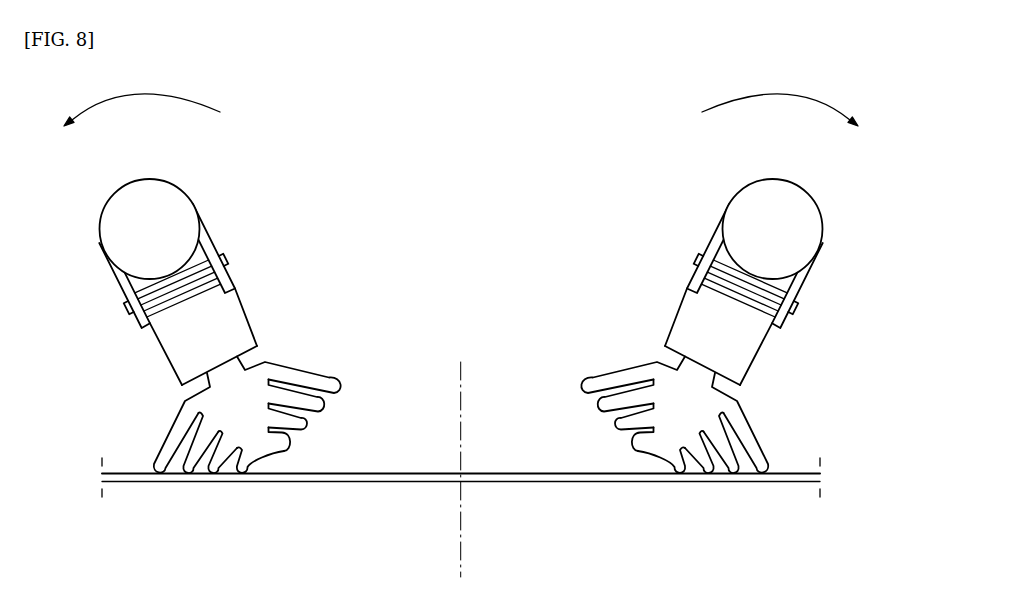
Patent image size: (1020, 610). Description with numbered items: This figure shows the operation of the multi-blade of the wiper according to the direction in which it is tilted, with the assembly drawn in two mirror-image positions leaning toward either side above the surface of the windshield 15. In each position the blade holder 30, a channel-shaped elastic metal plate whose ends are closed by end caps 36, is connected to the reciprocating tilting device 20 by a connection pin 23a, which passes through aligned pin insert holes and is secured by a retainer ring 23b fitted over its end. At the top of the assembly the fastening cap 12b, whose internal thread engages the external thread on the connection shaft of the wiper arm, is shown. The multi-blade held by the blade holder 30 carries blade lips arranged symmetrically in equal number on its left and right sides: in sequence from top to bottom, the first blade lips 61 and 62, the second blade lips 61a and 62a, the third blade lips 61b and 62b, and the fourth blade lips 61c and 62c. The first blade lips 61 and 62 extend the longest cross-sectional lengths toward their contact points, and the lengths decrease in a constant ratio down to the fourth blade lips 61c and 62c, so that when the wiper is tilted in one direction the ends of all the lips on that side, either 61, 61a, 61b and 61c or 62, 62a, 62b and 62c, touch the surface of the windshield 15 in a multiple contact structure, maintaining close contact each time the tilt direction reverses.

The fastening cap 12b is at (116, 207).
The windshield 15 is at (482, 482).
The reciprocating tilting device 20 is at (206, 232).
The connection pin 23a is at (229, 258).
The retainer ring 23b is at (125, 304).
The blade holder 30 is at (252, 317).
The end cap 36 is at (180, 347).
The first blade lip 61 is at (313, 376).
The second blade lip 61a is at (323, 407).
The third blade lip 61b is at (305, 430).
The fourth blade lip 61c is at (285, 447).
The first blade lip 62 is at (165, 457).
The second blade lip 62a is at (189, 473).
The third blade lip 62b is at (207, 475).
The fourth blade lip 62c is at (247, 475).